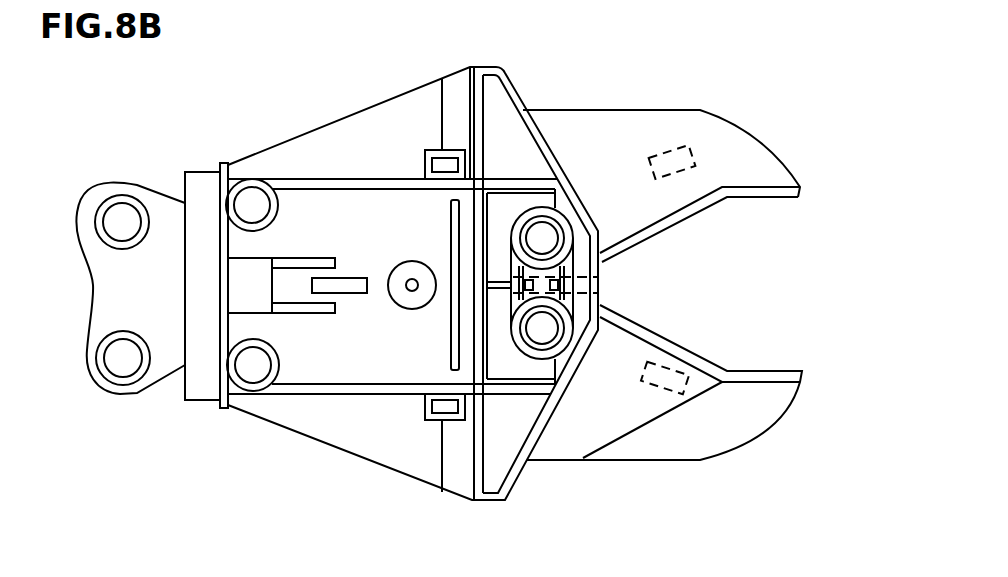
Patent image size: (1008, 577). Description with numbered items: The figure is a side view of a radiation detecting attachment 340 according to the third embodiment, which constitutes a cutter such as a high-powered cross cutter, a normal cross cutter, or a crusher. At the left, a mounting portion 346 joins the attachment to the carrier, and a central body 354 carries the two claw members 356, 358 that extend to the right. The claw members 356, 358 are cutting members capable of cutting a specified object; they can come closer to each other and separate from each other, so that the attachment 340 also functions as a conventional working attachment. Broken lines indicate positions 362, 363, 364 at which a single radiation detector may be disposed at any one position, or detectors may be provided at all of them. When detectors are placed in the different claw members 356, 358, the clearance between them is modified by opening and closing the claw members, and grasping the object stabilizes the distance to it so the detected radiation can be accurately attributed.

The radiation detecting attachment 340 is at (535, 74).
The mounting bracket 346 is at (158, 311).
The housing body 354 is at (403, 227).
The claw member 356 is at (615, 161).
The claw member 358 is at (617, 417).
The radiation detector position 362 is at (678, 160).
The radiation detector position 363 is at (586, 279).
The radiation detector position 364 is at (683, 392).